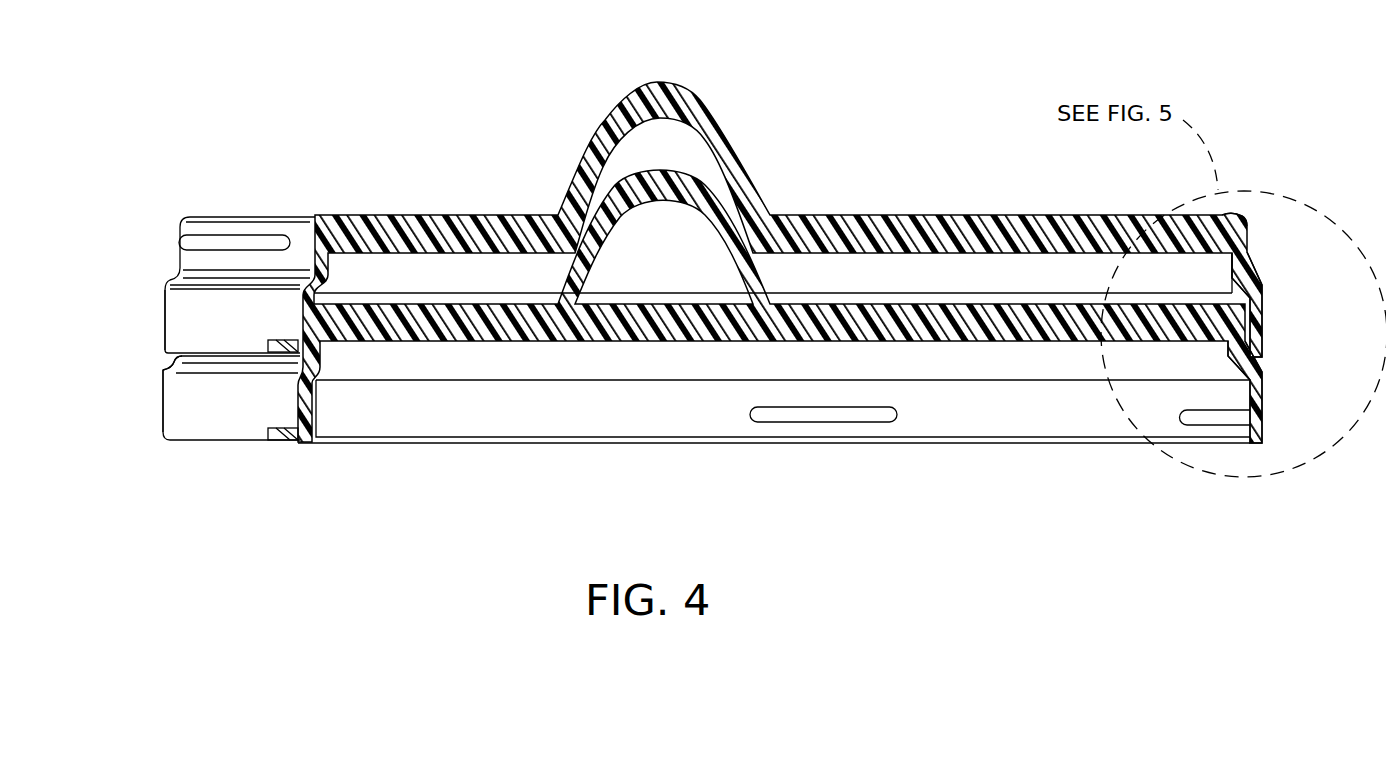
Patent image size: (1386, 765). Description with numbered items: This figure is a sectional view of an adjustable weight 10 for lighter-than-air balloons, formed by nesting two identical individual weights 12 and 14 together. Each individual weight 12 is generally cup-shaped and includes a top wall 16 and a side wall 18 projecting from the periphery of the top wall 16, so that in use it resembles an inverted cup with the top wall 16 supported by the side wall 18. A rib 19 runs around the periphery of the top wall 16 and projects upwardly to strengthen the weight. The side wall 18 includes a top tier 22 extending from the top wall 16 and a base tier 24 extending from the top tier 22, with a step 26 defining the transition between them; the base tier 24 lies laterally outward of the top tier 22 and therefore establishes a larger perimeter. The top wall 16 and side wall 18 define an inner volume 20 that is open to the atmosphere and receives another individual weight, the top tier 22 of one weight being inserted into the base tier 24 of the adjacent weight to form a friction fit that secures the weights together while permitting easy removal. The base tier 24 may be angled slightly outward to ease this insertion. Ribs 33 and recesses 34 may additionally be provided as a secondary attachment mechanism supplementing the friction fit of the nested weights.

The adjustable weight 10 is at (975, 114).
The individual weight 12 is at (152, 402).
The individual weight 14 is at (152, 301).
The top wall 16 is at (838, 213).
The side wall 18 is at (1252, 272).
The rib 19 is at (1228, 220).
The inner volume 20 is at (774, 460).
The top tier 22 is at (190, 220).
The base tier 24 is at (165, 327).
The step 26 is at (182, 279).
The rib 33 is at (1248, 233).
The recess 34 is at (1248, 424).